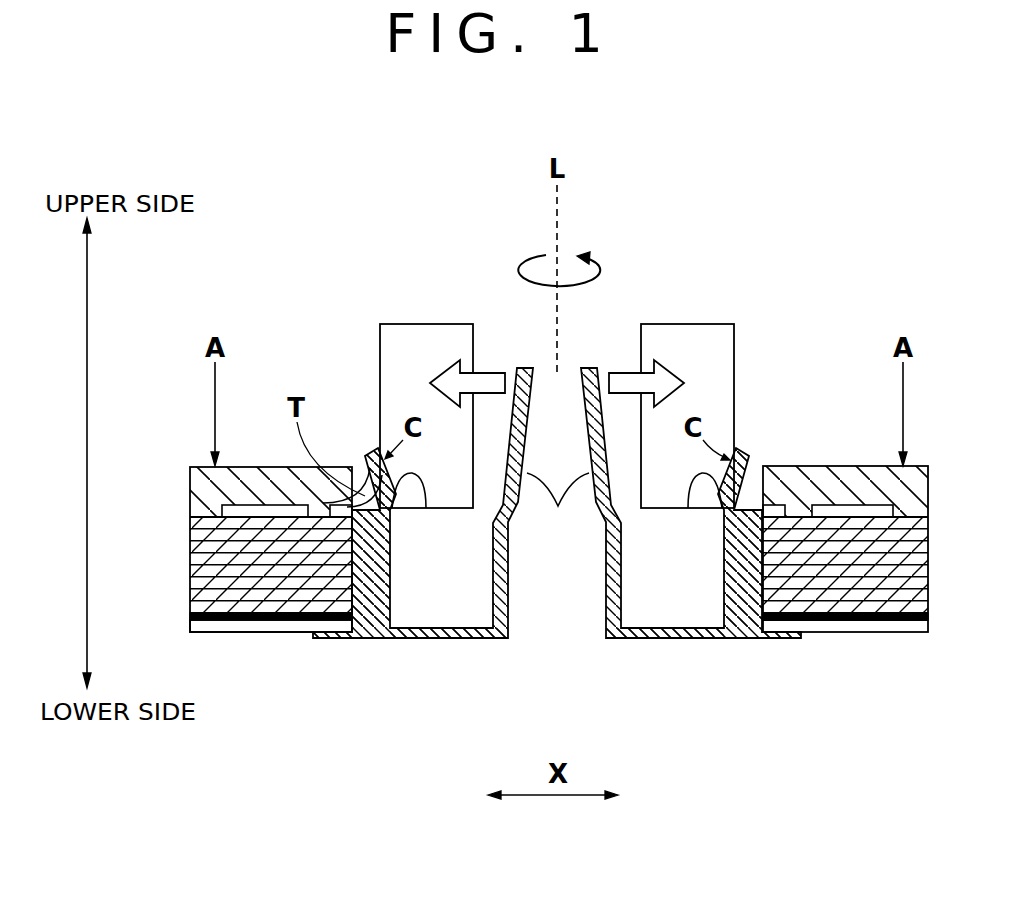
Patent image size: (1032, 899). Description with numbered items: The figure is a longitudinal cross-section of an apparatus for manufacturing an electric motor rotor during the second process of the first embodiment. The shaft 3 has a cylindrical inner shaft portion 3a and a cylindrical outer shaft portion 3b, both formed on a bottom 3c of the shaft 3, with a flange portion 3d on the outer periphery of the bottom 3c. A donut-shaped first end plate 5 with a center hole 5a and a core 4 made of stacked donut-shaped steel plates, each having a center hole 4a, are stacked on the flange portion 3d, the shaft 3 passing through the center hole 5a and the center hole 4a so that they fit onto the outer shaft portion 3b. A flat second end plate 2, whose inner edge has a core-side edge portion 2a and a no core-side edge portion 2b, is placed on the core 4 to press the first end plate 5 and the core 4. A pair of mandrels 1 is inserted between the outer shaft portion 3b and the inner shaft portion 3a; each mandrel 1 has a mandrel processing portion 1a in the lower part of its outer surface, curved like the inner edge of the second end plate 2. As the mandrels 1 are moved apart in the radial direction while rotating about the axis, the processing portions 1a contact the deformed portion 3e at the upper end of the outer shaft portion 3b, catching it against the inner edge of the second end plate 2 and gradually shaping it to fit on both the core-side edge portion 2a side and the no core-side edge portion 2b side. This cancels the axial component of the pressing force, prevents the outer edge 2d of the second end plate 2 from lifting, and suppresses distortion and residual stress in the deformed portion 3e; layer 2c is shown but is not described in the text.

The mandrel 1 is at (405, 330).
The mandrel processing portion 1a is at (418, 492).
The second end plate 2 is at (249, 470).
The core-side edge portion 2a is at (318, 498).
The no core-side edge portion 2b is at (348, 478).
The insulating layer 2c is at (206, 541).
The outer edge 2d is at (207, 496).
The shaft 3 is at (502, 640).
The inner shaft portion 3a is at (558, 505).
The outer shaft portion 3b is at (378, 640).
The bottom 3c is at (425, 640).
The flange portion 3d is at (337, 640).
The deformed portion 3e is at (366, 456).
The core 4 is at (188, 602).
The center hole 4a is at (800, 472).
The first end plate 5 is at (247, 624).
The center hole 5a is at (757, 636).